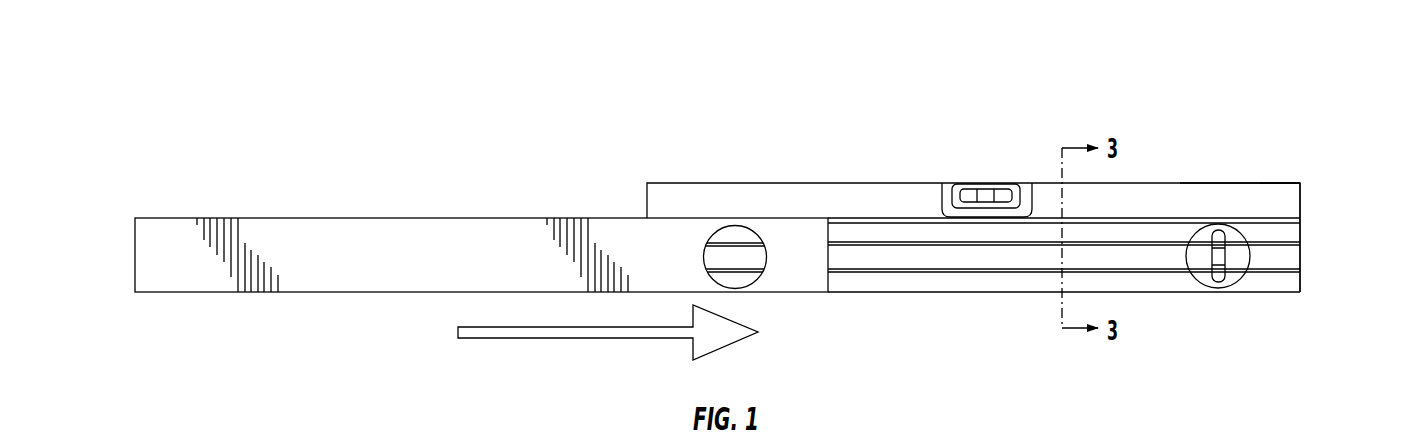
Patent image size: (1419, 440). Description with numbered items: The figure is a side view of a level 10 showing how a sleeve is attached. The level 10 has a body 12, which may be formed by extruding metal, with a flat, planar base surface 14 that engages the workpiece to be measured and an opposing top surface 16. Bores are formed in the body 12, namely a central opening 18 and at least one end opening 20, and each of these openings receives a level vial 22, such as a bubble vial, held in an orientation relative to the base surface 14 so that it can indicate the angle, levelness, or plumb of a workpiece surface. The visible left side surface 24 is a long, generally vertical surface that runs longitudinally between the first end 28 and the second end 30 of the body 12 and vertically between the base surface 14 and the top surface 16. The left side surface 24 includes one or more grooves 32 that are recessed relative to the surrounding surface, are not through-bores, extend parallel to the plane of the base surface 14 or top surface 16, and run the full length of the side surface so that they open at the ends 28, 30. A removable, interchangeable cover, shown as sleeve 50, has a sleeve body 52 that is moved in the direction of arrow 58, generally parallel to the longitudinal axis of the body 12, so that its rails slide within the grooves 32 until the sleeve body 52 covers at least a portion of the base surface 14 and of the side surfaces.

The level 10 is at (1230, 108).
The body 12 is at (1290, 192).
The base surface 14 is at (1162, 296).
The top surface 16 is at (866, 183).
The central opening 18 is at (979, 149).
The end opening 20 is at (1204, 264).
The level vial 22 is at (990, 190).
The left side surface 24 is at (1253, 190).
The first end 28 is at (621, 189).
The second end 30 is at (1306, 240).
The groove 32 is at (943, 273).
The sleeve 50 is at (234, 180).
The sleeve body 52 is at (293, 218).
The arrow 58 is at (575, 338).